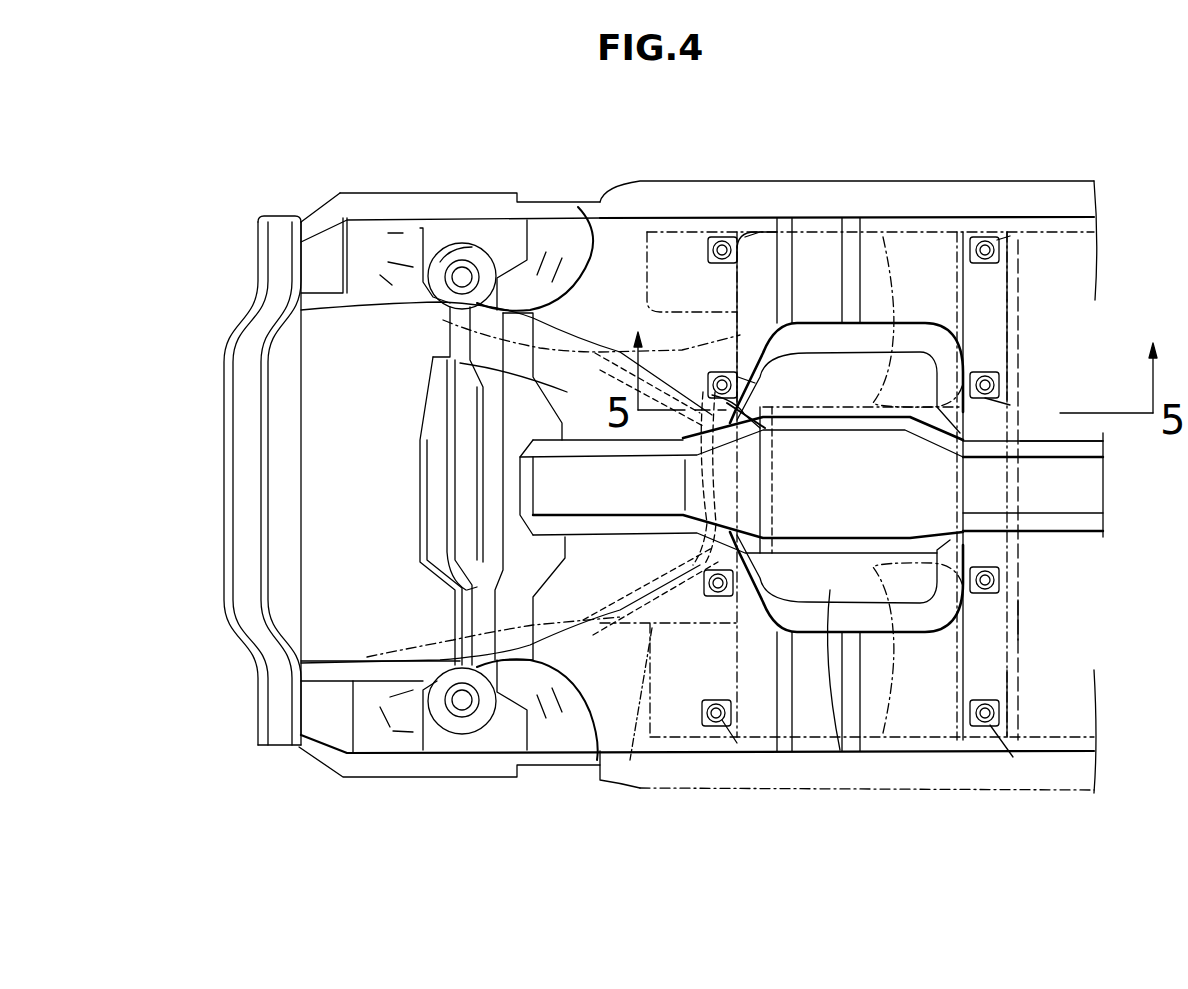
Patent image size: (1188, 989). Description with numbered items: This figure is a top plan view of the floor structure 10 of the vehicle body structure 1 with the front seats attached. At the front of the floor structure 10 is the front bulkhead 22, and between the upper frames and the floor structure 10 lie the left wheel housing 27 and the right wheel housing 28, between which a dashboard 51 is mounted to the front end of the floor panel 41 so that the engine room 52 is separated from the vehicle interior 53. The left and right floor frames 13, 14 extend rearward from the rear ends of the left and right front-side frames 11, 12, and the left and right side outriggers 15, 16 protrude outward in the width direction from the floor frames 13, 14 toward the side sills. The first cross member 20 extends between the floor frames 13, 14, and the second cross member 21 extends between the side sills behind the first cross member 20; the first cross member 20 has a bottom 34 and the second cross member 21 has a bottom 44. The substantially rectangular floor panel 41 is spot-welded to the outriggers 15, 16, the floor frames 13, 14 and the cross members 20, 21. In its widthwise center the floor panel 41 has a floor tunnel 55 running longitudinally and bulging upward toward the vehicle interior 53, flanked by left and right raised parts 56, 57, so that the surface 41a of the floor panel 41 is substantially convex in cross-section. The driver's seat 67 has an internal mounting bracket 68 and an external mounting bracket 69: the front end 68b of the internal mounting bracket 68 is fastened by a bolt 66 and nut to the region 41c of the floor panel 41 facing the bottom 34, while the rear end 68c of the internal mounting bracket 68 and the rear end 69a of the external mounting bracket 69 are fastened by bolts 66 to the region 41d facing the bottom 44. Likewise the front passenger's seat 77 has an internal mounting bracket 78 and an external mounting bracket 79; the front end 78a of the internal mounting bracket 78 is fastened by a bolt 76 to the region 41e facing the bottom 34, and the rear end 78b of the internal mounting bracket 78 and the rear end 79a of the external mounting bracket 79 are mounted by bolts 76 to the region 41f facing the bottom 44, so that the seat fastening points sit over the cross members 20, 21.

The vehicle body structure 1 is at (226, 186).
The floor structure for a vehicle body 10 is at (407, 275).
The left front-side frame 11 is at (340, 675).
The right front-side frame 12 is at (330, 292).
The left floor frame 13 is at (653, 737).
The right floor frame 14 is at (663, 217).
The left side outrigger 15 is at (597, 700).
The right side outrigger 16 is at (577, 283).
The first cross member 20 is at (652, 628).
The second cross member 21 is at (1013, 613).
The front bulkhead 22 is at (243, 428).
The left wheel housing 27 is at (441, 742).
The right wheel housing 28 is at (442, 235).
The bottom of the first cross member 34 is at (733, 478).
The floor panel 41 is at (470, 378).
The surface of the floor panel 41a is at (563, 500).
The region of the floor panel facing the bottom of the first cross member 41c is at (743, 430).
The region of the floor panel facing the bottom of the second cross member 41d is at (990, 307).
The region of the floor panel facing the bottom of the first cross member 41e is at (735, 660).
The region of the floor panel facing the bottom of the second cross member 41f is at (990, 657).
The bottom of the second cross member 44 is at (990, 333).
The dashboard 51 is at (485, 581).
The engine room 52 is at (340, 497).
The vehicle interior 53 is at (845, 497).
The floor tunnel 55 is at (557, 417).
The left raised part 56 is at (837, 752).
The right raised part 57 is at (831, 358).
The bolt 66 is at (722, 238).
The driver's seat 67 is at (803, 222).
The internal mounting bracket 68 is at (728, 377).
The front end of the internal mounting bracket 68b is at (728, 410).
The rear end of the internal mounting bracket 68c is at (1000, 400).
The external mounting bracket 69 is at (731, 230).
The rear end of the external mounting bracket 69a is at (997, 240).
The bolt 76 is at (713, 577).
The front passenger's seat 77 is at (803, 755).
The internal mounting bracket 78 is at (700, 591).
The front end of the internal mounting bracket 78a is at (753, 537).
The rear end of the internal mounting bracket 78b is at (1008, 565).
The external mounting bracket 79 is at (737, 743).
The rear end of the external mounting bracket 79a is at (1013, 757).